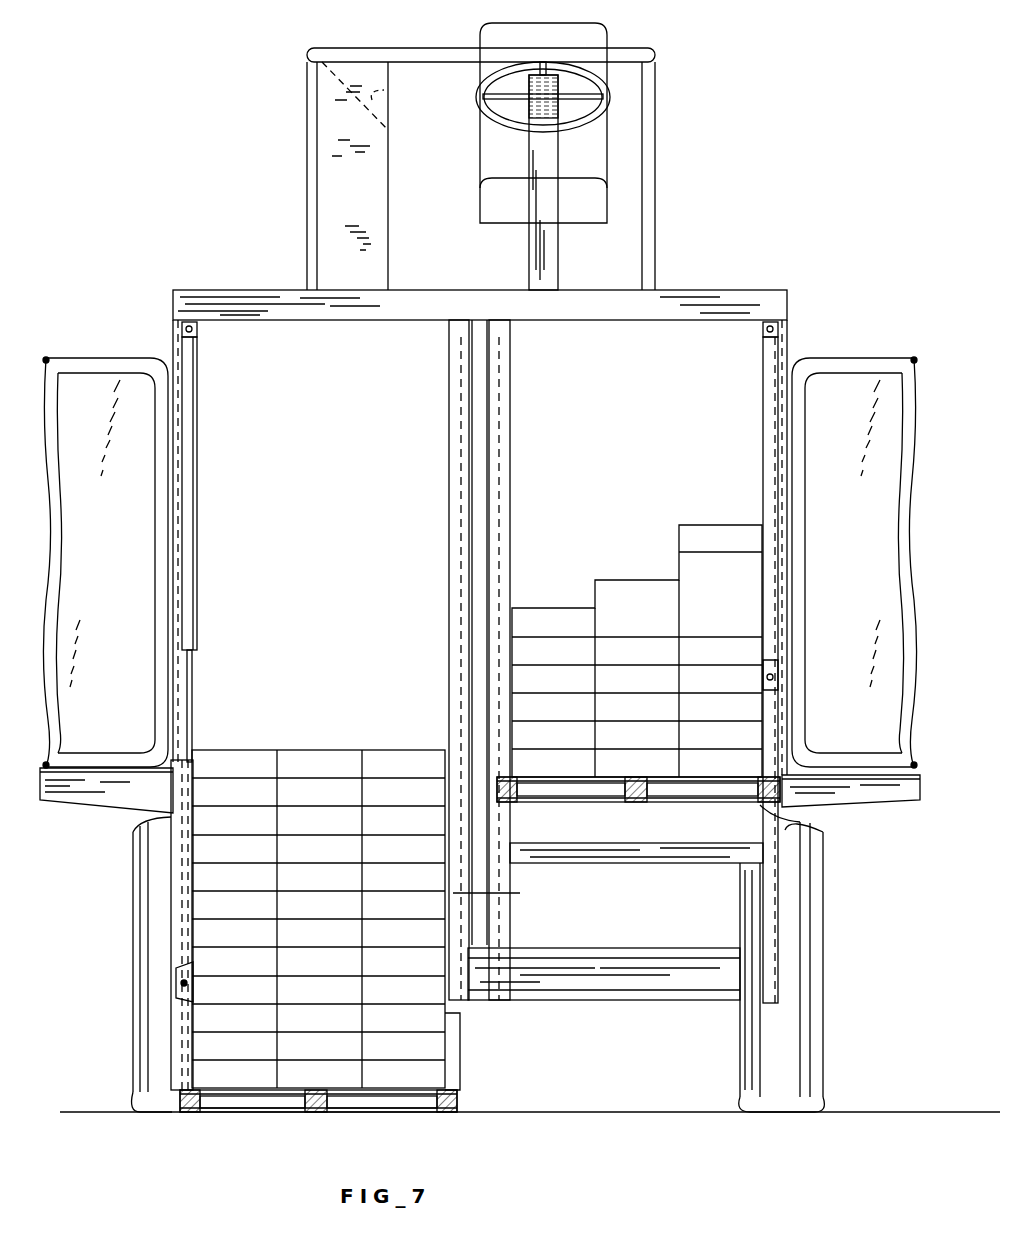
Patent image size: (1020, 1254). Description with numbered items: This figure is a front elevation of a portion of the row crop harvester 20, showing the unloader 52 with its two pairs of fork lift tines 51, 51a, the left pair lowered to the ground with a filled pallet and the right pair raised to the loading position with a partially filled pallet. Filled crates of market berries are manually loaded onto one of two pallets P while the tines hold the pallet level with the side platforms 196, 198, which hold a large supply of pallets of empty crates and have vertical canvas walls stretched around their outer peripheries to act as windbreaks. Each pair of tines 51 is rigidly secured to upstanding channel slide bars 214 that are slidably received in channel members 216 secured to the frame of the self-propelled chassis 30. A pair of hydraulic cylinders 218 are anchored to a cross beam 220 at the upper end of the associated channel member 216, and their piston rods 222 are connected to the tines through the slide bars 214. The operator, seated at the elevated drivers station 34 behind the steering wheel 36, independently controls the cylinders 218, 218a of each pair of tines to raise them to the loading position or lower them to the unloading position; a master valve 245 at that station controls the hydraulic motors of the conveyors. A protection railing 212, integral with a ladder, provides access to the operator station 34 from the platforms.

The row crop harvester 20 is at (714, 170).
The self-propelled chassis 30 is at (663, 853).
The drivers station 34 is at (632, 40).
The steering wheel 36 is at (486, 108).
The fork lift tines 51 is at (355, 1090).
The fork lift tines 51a is at (690, 805).
The unloader 52 is at (768, 808).
The platform 196 is at (818, 777).
The platform 198 is at (78, 768).
The protection railing 212 is at (335, 52).
The channel slide bars 214 is at (175, 1036).
The channel members 216 is at (198, 326).
The hydraulic cylinders 218 is at (192, 412).
The hydraulic cylinders 218a is at (513, 412).
The cross beam 220 is at (200, 292).
The piston rods 222 is at (445, 663).
The master valve 245 is at (382, 95).
The pallets P is at (448, 1095).